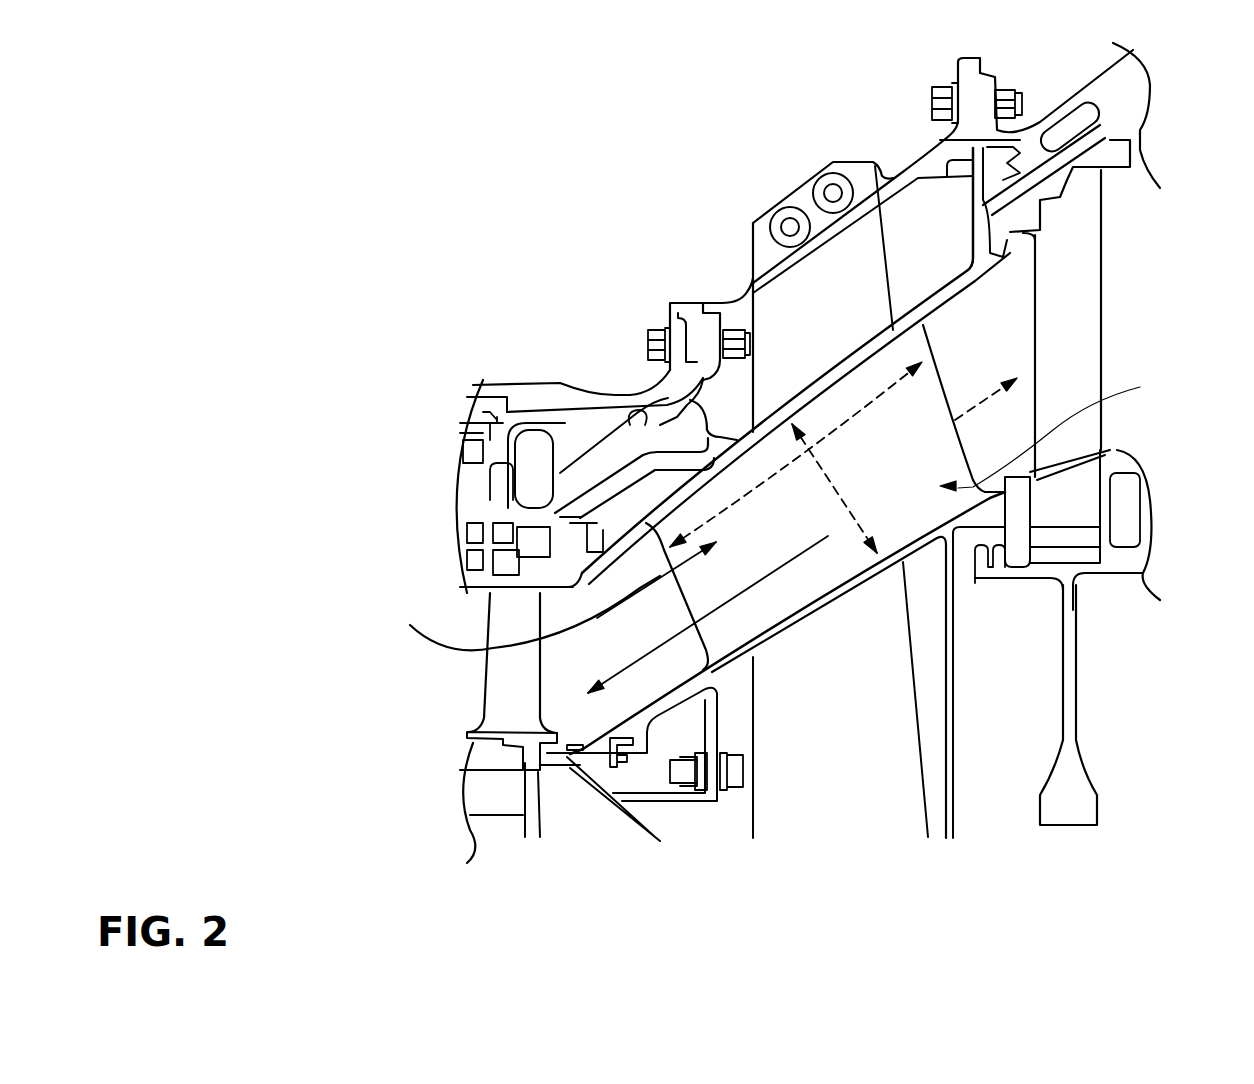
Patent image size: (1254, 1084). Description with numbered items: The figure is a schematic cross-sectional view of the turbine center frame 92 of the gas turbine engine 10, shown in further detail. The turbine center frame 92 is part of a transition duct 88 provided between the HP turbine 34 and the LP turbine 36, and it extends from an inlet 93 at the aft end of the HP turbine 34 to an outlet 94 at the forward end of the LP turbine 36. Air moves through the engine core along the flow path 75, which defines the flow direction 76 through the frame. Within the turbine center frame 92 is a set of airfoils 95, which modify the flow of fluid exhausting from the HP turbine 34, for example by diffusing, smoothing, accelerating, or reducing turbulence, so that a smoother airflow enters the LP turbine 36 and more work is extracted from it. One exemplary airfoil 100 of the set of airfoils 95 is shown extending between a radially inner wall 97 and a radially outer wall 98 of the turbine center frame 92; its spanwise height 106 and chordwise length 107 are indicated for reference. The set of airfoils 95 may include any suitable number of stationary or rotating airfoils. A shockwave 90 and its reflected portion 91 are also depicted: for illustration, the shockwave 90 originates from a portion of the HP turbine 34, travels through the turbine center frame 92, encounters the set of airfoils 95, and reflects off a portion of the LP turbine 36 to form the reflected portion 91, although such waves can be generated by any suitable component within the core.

The gas turbine engine 10 is at (540, 168).
The HP turbine 34 is at (483, 620).
The LP turbine 36 is at (1128, 232).
The flow path 75 is at (960, 345).
The flow direction 76 is at (950, 420).
The transition duct 88 is at (808, 392).
The shockwave 90 is at (410, 628).
The reflected portion 91 is at (622, 682).
The turbine center frame 92 is at (733, 430).
The inlet 93 is at (580, 575).
The outlet 94 is at (1011, 233).
The set of airfoils 95 is at (1058, 429).
The radially inner wall 97 is at (846, 588).
The radially outer wall 98 is at (836, 380).
The airfoil 100 is at (693, 590).
The spanwise height 106 is at (845, 500).
The chordwise length 107 is at (746, 498).